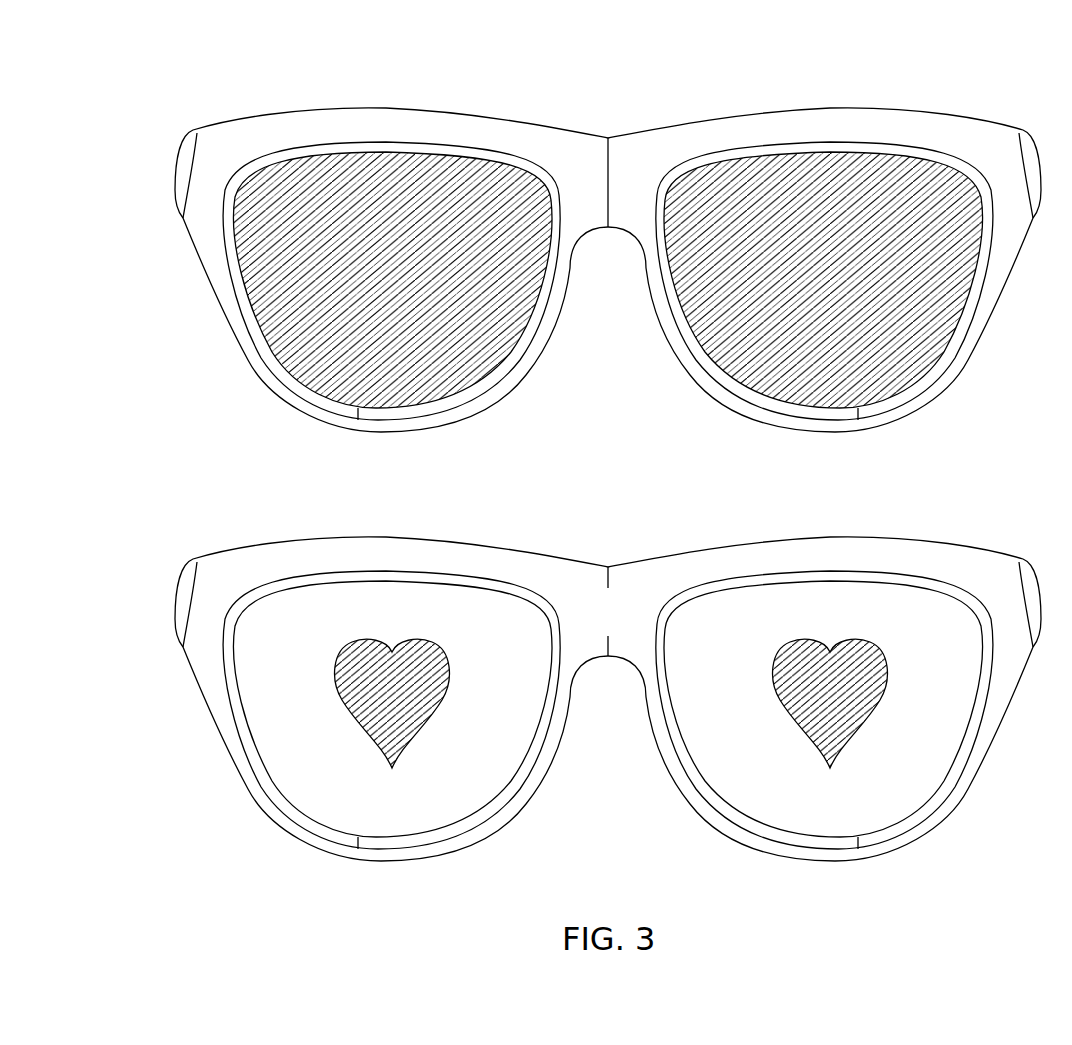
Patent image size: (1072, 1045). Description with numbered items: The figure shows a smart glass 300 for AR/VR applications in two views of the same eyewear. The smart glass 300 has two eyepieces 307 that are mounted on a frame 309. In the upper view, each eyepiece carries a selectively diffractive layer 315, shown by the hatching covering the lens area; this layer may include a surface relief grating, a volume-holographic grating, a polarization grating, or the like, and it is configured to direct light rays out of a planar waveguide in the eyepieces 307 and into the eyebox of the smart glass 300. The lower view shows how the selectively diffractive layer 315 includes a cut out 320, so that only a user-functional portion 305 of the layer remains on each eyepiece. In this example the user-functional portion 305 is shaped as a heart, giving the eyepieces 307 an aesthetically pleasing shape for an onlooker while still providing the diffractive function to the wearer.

The smart glass 300 is at (226, 60).
The frame 309 is at (795, 108).
The eyepieces 307 is at (736, 322).
The selectively diffractive layer 315 is at (857, 275).
The cut out 320 is at (778, 623).
The user-functional portion 305 is at (803, 704).